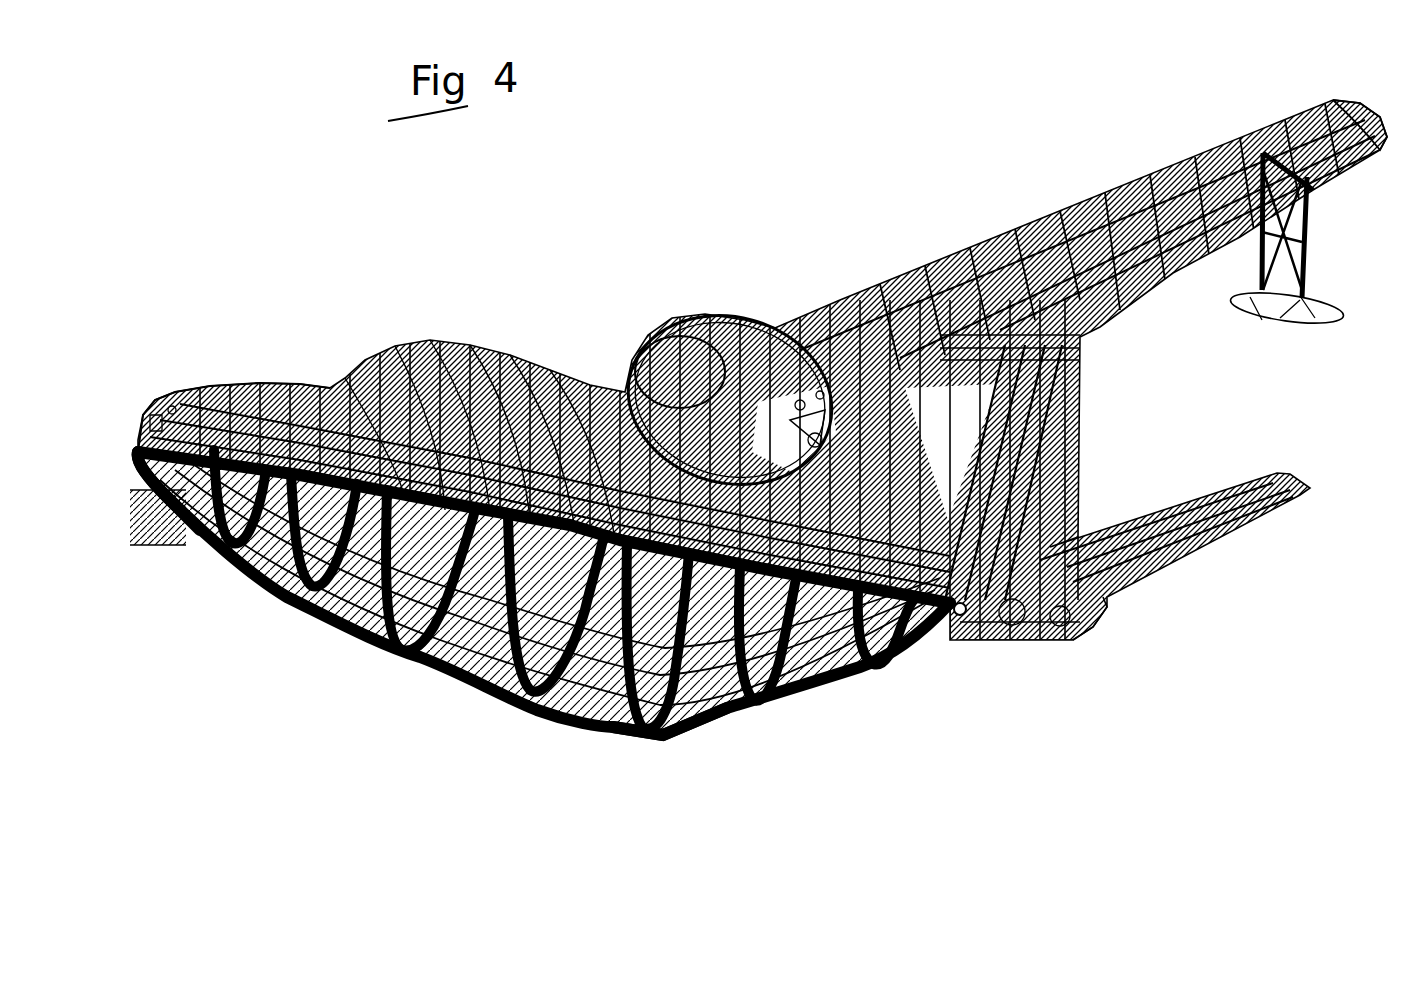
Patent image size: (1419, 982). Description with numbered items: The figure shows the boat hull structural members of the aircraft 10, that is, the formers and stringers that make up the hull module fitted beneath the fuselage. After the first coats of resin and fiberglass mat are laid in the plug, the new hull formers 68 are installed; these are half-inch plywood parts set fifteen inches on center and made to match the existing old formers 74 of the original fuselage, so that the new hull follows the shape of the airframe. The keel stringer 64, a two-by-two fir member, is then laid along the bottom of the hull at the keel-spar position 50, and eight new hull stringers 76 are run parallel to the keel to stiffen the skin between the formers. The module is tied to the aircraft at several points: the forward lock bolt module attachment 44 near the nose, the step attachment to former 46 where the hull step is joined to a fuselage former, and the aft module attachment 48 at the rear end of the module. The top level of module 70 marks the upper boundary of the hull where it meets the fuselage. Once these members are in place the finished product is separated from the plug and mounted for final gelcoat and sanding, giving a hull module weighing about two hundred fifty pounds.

The aircraft fuselage frame 10 is at (733, 417).
The forward lock bolt module attachment 44 is at (187, 440).
The step attachment to former 46 is at (670, 723).
The aft module attachment 48 is at (958, 612).
The keel-spar position 50 is at (562, 718).
The keel stringer 64 is at (665, 735).
The new hull former 68 is at (510, 582).
The top level of module 70 is at (252, 580).
The old formers 74 is at (183, 505).
The new hull stringers 76 is at (790, 707).